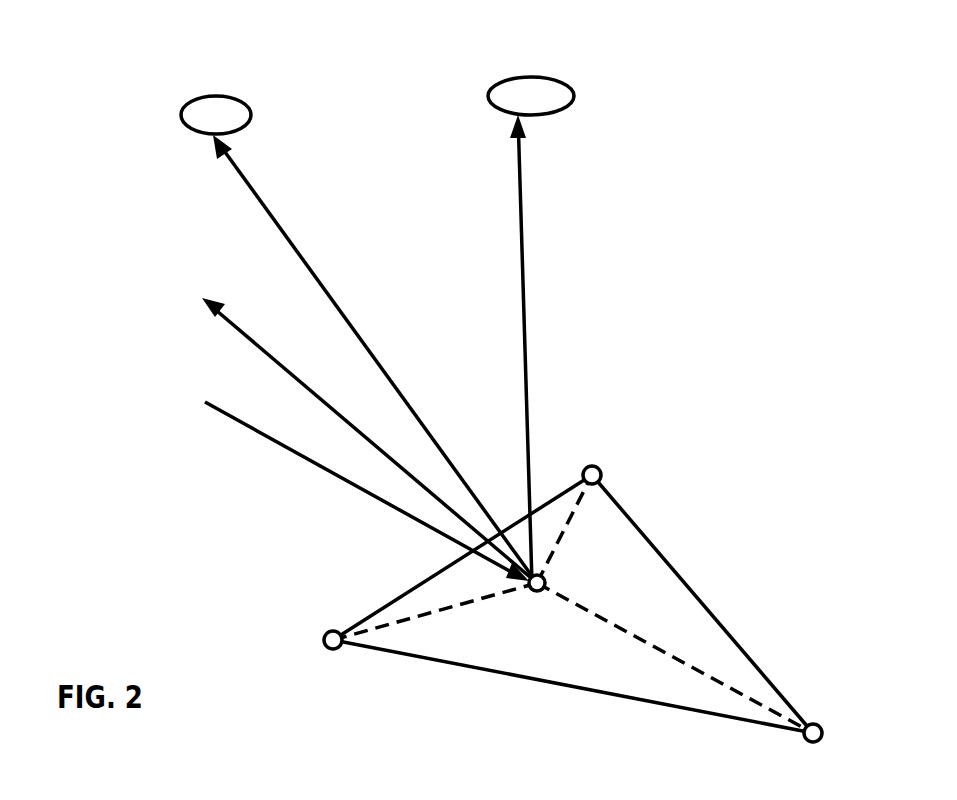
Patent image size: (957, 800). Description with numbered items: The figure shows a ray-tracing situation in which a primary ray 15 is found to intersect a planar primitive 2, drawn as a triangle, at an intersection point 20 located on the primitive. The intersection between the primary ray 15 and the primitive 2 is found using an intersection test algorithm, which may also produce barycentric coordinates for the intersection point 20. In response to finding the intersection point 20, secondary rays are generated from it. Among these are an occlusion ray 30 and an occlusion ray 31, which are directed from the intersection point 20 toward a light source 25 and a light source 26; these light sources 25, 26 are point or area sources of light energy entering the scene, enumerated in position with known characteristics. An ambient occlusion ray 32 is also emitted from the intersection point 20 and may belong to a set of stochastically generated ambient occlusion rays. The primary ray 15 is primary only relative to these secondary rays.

The primitive 2 is at (573, 615).
The primary ray 15 is at (319, 491).
The intersection point 20 is at (445, 667).
The light source 25 is at (265, 89).
The light source 26 is at (601, 97).
The occlusion ray 30 is at (375, 348).
The occlusion ray 31 is at (437, 349).
The ambient occlusion ray 32 is at (312, 400).